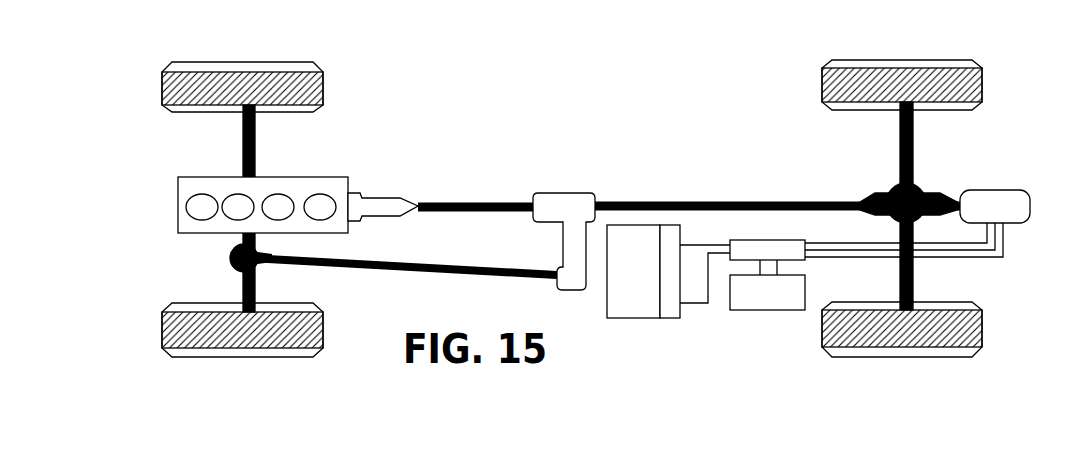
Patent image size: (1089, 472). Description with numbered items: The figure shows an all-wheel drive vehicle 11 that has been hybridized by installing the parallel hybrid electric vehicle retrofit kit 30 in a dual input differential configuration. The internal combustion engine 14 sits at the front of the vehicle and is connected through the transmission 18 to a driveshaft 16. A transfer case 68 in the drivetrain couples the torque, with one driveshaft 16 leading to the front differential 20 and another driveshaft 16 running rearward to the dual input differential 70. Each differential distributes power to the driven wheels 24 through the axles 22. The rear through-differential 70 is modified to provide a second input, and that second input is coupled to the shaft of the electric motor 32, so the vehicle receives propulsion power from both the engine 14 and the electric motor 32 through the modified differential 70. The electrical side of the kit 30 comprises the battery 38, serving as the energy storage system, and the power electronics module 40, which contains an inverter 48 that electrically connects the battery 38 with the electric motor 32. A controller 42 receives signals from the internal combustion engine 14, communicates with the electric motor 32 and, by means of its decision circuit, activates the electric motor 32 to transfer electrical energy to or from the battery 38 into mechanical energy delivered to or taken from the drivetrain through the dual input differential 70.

The vehicle 11 is at (470, 158).
The internal combustion engine 14 is at (268, 178).
The driveshaft 16 is at (448, 202).
The transmission 18 is at (352, 195).
The differential 20 is at (233, 255).
The axles 22 is at (243, 160).
The driven wheels 24 is at (175, 108).
The hybrid electric vehicle retrofit kit 30 is at (595, 315).
The electric motor 32 is at (1025, 193).
The battery 38 is at (622, 232).
The power electronics module 40 is at (672, 232).
The controller 42 is at (777, 322).
The inverter 48 is at (793, 240).
The transfer case 68 is at (548, 198).
The dual input differential 70 is at (920, 193).